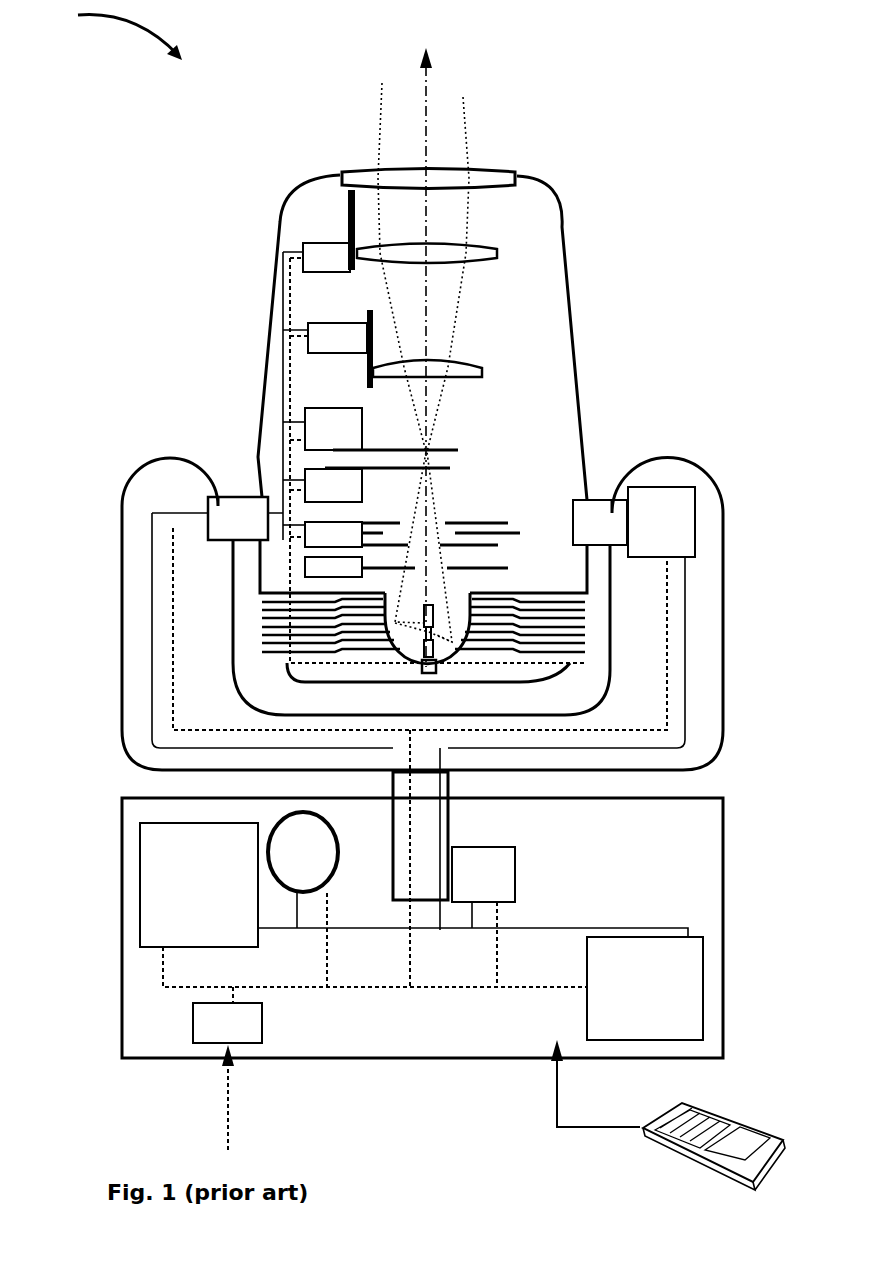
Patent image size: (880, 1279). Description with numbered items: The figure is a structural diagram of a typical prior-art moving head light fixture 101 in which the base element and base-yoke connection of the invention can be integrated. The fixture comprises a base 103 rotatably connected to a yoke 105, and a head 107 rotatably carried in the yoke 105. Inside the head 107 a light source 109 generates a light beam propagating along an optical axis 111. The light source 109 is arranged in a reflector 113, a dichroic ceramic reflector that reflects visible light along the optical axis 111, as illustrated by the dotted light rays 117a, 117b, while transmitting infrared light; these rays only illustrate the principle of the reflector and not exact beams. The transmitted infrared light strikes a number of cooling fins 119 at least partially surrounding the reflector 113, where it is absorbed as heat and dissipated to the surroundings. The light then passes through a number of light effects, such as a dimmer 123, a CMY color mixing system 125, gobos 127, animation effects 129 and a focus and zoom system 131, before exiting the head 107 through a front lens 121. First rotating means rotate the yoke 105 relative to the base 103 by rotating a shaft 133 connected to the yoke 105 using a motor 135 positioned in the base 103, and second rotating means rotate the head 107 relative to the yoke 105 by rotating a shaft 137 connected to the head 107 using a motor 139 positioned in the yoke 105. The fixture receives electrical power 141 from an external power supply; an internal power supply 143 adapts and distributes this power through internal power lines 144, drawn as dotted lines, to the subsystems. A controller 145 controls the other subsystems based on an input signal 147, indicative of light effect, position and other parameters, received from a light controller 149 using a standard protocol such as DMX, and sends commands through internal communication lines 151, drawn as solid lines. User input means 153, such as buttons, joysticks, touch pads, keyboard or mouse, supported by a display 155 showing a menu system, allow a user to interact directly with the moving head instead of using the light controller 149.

The moving head light fixture 101 is at (107, 35).
The base 103 is at (312, 1060).
The yoke 105 is at (168, 456).
The head 107 is at (290, 196).
The light source 109 is at (440, 674).
The optical axis 111 is at (440, 88).
The reflector 113 is at (455, 640).
The light ray 117a is at (378, 112).
The light ray 117b is at (465, 125).
The cooling fins 119 is at (265, 605).
The front lens 121 is at (365, 170).
The dimmer 123 is at (406, 566).
The CMY color mixing system 125 is at (401, 534).
The gobos 127 is at (366, 485).
The animation effects 129 is at (370, 429).
The focus and zoom system 131 is at (503, 213).
The shaft 133 is at (452, 822).
The motor 135 is at (483, 917).
The shaft 137 is at (600, 522).
The motor 139 is at (661, 522).
The electrical power 141 is at (247, 1097).
The internal power supply 143 is at (227, 1023).
The internal power lines 144 is at (375, 975).
The controller 145 is at (645, 988).
The input signal 147 is at (595, 1083).
The light controller 149 is at (714, 1160).
The internal communication lines 151 is at (543, 927).
The user input means 153 is at (303, 899).
The display 155 is at (199, 885).